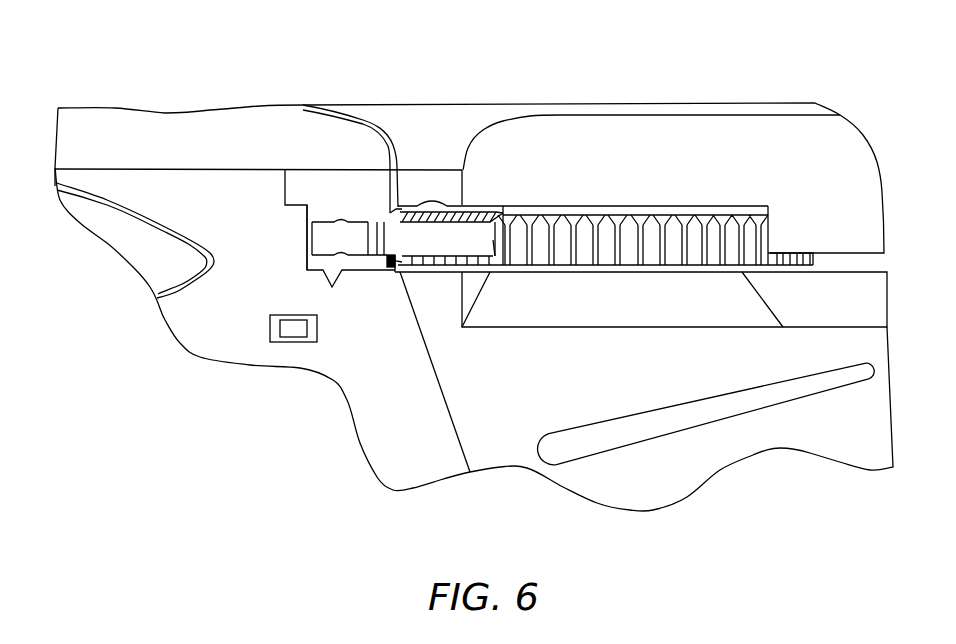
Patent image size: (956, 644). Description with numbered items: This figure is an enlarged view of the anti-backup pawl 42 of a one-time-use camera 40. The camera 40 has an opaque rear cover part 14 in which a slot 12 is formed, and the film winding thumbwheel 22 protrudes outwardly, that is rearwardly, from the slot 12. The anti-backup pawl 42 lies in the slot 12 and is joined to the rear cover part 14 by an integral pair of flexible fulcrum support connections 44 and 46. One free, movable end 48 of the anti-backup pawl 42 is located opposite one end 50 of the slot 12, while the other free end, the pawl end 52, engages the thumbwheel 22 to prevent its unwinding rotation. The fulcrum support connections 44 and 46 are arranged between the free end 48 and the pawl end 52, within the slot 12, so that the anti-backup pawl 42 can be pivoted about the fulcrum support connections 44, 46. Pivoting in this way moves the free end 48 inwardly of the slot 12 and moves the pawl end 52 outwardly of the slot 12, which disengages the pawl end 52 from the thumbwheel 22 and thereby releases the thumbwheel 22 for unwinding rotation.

The one-time-use camera 40 is at (166, 108).
The opaque rear cover part 14 is at (180, 320).
The slot 12 is at (357, 264).
The free end 48 is at (332, 233).
The flexible fulcrum support connection 44 is at (388, 210).
The anti-backup pawl 42 is at (427, 235).
The film winding thumbwheel 22 is at (667, 237).
The flexible fulcrum support connection 46 is at (395, 272).
The end of the slot 50 is at (303, 242).
The pawl end 52 is at (493, 240).